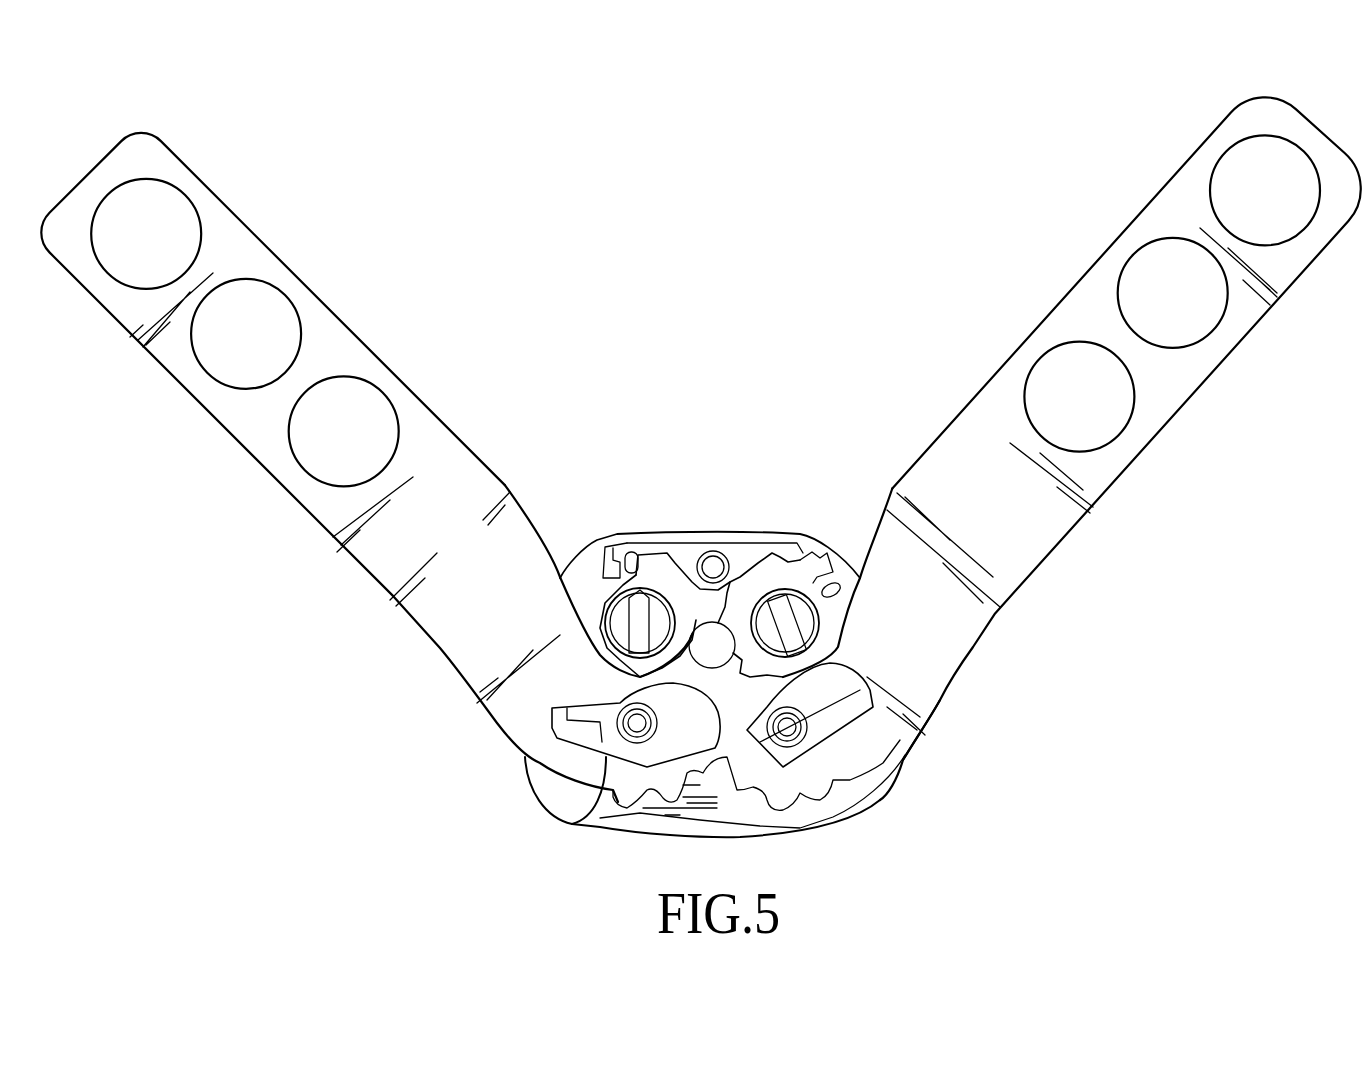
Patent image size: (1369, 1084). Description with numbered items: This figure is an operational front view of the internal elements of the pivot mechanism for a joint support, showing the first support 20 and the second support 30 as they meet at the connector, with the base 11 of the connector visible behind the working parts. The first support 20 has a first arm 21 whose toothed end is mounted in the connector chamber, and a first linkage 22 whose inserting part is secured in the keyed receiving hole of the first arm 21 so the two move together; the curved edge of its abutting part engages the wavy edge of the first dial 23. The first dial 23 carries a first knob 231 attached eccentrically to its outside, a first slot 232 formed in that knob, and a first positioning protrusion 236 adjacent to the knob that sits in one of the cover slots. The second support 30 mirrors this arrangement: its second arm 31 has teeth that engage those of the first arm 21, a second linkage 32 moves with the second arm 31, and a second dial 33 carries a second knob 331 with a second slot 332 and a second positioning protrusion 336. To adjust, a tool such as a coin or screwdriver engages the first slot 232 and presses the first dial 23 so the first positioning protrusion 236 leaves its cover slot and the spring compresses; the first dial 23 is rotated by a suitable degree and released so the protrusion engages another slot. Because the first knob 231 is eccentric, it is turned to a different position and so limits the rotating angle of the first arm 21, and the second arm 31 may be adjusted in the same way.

The base 11 is at (588, 563).
The first support 20 is at (510, 813).
The first arm 21 is at (397, 557).
The first linkage 22 is at (577, 817).
The first dial 23 is at (665, 573).
The first knob 231 is at (617, 612).
The first slot 232 is at (640, 617).
The first positioning protrusion 236 is at (632, 560).
The second support 30 is at (920, 753).
The second arm 31 is at (990, 552).
The second linkage 32 is at (820, 743).
The second dial 33 is at (793, 563).
The second knob 331 is at (805, 640).
The second slot 332 is at (793, 627).
The second positioning protrusion 336 is at (832, 590).